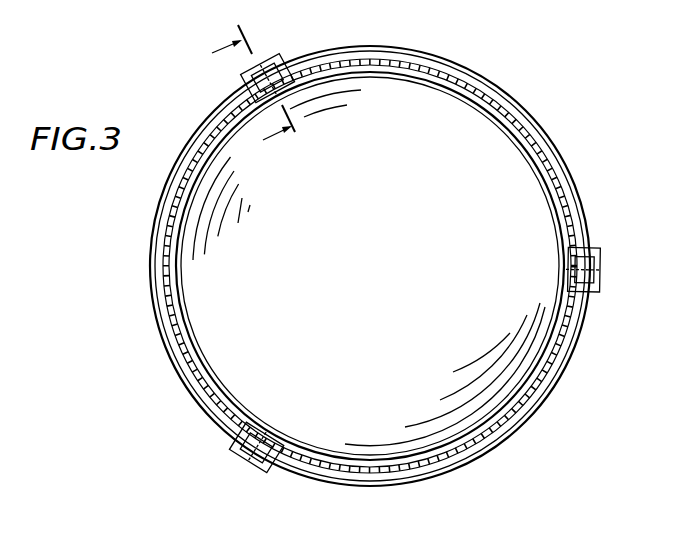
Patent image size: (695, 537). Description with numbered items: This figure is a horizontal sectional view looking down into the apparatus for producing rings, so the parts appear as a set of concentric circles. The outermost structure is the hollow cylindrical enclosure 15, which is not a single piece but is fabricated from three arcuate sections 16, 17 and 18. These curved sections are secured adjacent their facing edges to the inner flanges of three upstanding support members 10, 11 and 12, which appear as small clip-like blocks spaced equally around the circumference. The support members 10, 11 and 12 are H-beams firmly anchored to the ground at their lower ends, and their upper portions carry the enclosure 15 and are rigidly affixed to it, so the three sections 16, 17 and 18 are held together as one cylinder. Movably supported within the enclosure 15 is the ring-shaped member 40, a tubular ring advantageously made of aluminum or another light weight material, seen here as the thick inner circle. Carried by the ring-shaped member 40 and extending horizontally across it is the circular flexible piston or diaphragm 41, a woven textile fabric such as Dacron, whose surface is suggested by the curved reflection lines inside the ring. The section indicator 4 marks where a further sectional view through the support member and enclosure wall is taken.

The section line 4- 4 is at (239, 91).
The support member 10 is at (597, 261).
The support member 11 is at (276, 60).
The support member 12 is at (264, 463).
The hollow cylindrical enclosure 15 is at (543, 145).
The arcuate section 16 is at (563, 203).
The arcuate section 17 is at (497, 431).
The arcuate section 18 is at (166, 314).
The ring-shaped member 40 is at (172, 248).
The flexible piston or diaphragm 41 is at (195, 213).